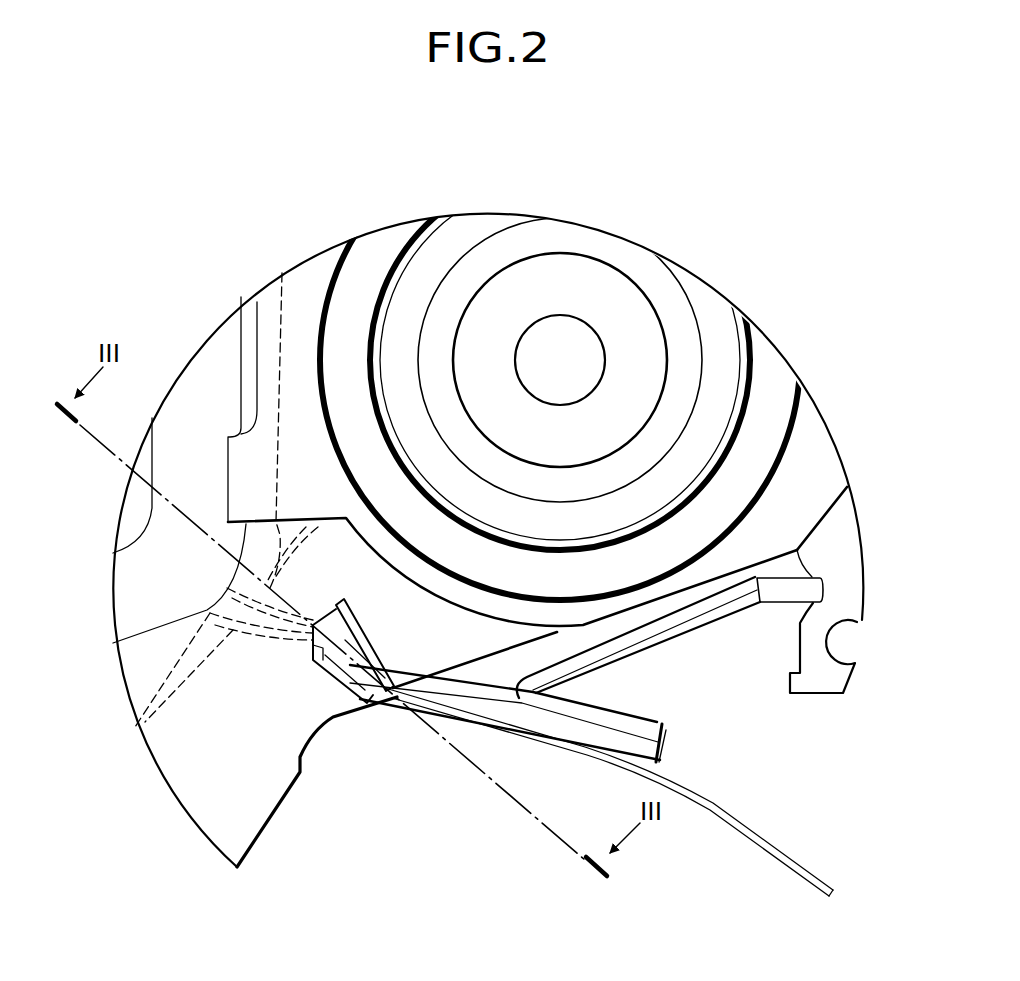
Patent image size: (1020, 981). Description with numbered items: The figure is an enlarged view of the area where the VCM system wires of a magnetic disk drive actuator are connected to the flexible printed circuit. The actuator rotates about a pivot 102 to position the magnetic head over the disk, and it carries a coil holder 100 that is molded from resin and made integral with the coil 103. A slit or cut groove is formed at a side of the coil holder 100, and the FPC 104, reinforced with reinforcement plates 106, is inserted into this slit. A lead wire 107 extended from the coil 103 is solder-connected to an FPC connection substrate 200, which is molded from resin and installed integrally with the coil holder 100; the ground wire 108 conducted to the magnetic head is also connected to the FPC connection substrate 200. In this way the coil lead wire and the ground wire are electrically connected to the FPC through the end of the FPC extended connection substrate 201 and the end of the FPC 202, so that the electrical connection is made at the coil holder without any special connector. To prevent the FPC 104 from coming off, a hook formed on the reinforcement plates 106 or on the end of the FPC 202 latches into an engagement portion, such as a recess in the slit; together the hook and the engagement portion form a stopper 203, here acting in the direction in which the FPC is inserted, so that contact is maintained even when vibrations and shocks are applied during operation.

The coil holder 100 is at (238, 832).
The pivot 102 is at (621, 268).
The coil 103 is at (202, 372).
The FPC 104 is at (747, 827).
The reinforcement plates 106 is at (665, 747).
The lead wire 107 is at (137, 727).
The ground wire 108 is at (282, 273).
The FPC connection substrate 200 is at (320, 670).
The end of FPC extended connection substrate 201 is at (353, 697).
The end of the FPC 202 is at (390, 690).
The stopper 203 is at (365, 642).